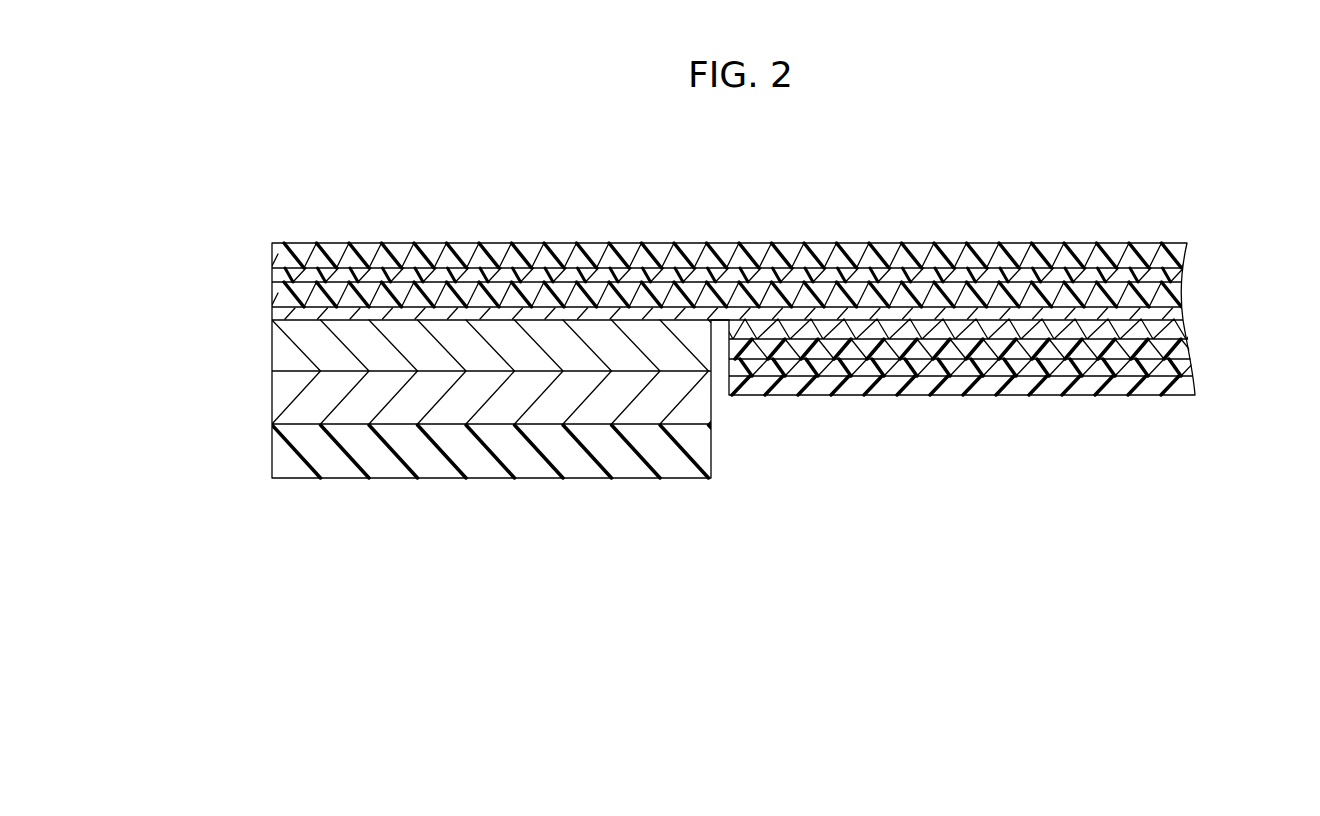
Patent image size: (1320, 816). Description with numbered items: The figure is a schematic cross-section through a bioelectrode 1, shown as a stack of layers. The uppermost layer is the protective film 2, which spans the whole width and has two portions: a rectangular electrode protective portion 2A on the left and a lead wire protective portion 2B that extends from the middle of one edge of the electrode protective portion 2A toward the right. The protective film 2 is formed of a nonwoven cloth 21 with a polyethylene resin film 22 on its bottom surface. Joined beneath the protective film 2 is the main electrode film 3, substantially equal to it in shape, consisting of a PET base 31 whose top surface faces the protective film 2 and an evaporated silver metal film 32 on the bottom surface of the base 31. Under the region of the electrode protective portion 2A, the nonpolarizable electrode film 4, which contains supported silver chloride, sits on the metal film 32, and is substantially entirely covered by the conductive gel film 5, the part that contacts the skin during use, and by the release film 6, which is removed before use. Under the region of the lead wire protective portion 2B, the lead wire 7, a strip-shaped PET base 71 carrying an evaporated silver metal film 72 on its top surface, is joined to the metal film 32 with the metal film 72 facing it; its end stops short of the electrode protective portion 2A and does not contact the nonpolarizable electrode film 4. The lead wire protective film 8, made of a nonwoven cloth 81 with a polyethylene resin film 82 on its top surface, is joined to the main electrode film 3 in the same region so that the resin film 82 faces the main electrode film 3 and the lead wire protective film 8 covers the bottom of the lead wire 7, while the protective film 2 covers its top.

The bioelectrode 1 is at (729, 180).
The protective film 2 is at (196, 231).
The electrode protective portion 2A is at (711, 225).
The lead wire protective portion 2B is at (1186, 225).
The nonwoven cloth 21 is at (282, 255).
The resin film 22 is at (282, 276).
The main electrode film 3 is at (1268, 253).
The base 31 is at (1175, 295).
The metal film 32 is at (1178, 317).
The nonpolarizable electrode film 4 is at (282, 352).
The conductive gel film 5 is at (282, 398).
The release film 6 is at (282, 458).
The lead wire 7 is at (1268, 322).
The base 71 is at (1190, 353).
The metal film 72 is at (1187, 333).
The lead wire protective film 8 is at (1268, 392).
The nonwoven cloth 81 is at (1182, 390).
The resin film 82 is at (1195, 367).